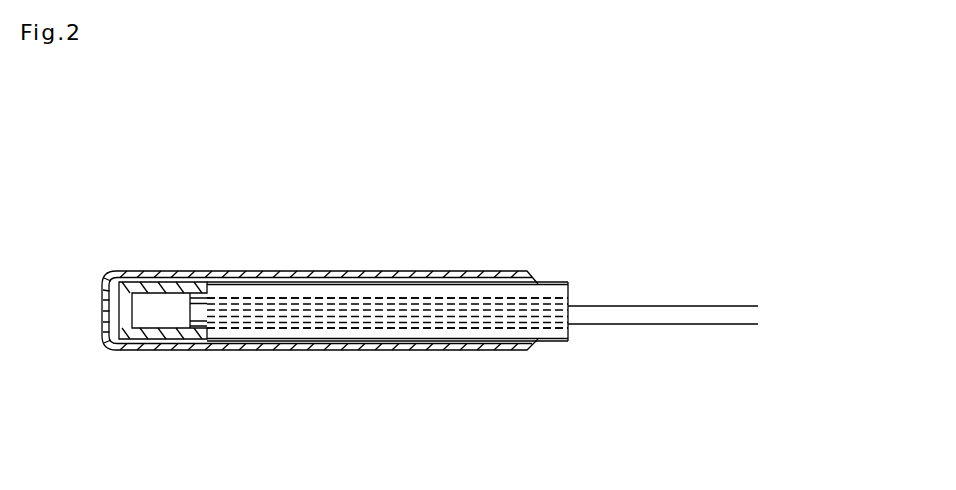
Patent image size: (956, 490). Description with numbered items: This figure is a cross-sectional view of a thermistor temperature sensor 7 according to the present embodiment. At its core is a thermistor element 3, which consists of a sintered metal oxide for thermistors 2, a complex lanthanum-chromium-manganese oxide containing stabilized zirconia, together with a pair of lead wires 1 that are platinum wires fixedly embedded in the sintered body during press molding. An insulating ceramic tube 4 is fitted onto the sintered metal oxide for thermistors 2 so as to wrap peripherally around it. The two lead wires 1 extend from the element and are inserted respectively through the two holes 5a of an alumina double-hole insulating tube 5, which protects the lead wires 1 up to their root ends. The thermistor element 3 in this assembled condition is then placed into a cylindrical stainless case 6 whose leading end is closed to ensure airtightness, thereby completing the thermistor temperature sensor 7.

The lead wires 1 is at (665, 308).
The sintered metal oxide for thermistors 2 is at (186, 283).
The thermistor element 3 is at (131, 312).
The insulating ceramic tube 4 is at (155, 277).
The double-hole insulating tube 5 is at (427, 272).
The holes 5a is at (380, 297).
The cylindrical stainless case 6 is at (277, 272).
The thermistor temperature sensor 7 is at (373, 218).